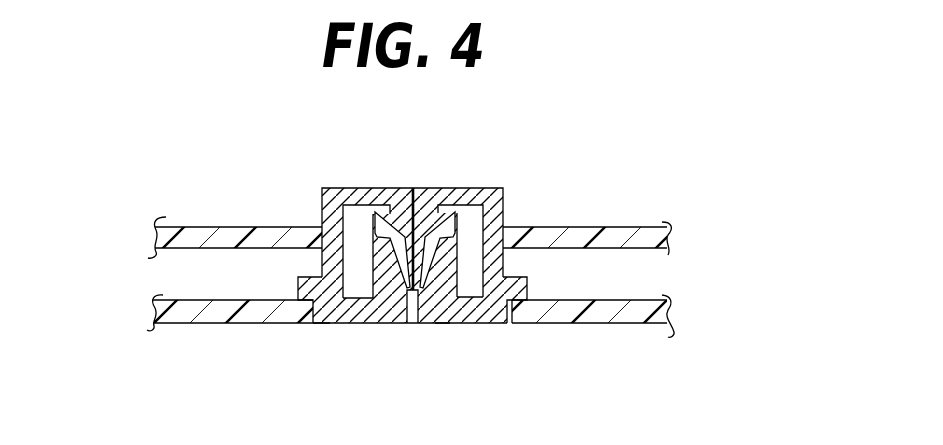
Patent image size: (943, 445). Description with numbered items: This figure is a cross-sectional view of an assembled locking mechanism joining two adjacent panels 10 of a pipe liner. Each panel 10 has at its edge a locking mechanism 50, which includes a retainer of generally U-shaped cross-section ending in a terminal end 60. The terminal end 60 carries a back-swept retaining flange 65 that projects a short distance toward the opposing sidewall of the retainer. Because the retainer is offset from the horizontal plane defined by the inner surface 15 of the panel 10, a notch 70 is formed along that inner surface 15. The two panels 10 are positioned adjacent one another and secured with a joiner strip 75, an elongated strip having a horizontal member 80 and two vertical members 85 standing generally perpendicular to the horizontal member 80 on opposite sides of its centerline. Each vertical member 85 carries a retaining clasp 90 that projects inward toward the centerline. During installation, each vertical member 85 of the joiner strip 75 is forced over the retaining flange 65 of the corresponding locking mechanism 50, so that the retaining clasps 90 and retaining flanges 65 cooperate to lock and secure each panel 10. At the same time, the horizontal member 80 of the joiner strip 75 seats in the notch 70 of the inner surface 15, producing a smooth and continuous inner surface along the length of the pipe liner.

The panel 10 is at (310, 188).
The inner surface 15 is at (192, 324).
The locking mechanism 50 is at (312, 216).
The terminal end 60 is at (421, 300).
The retaining flange 65 is at (322, 323).
The notch 70 is at (308, 324).
The joiner strip 75 is at (352, 334).
The horizontal member 80 is at (480, 323).
The vertical member 85 is at (378, 214).
The retaining clasp 90 is at (378, 210).